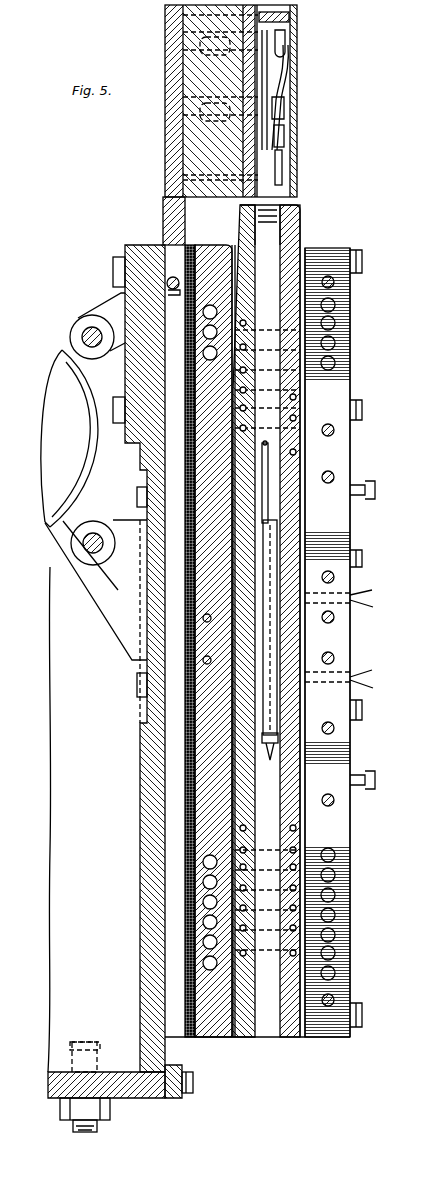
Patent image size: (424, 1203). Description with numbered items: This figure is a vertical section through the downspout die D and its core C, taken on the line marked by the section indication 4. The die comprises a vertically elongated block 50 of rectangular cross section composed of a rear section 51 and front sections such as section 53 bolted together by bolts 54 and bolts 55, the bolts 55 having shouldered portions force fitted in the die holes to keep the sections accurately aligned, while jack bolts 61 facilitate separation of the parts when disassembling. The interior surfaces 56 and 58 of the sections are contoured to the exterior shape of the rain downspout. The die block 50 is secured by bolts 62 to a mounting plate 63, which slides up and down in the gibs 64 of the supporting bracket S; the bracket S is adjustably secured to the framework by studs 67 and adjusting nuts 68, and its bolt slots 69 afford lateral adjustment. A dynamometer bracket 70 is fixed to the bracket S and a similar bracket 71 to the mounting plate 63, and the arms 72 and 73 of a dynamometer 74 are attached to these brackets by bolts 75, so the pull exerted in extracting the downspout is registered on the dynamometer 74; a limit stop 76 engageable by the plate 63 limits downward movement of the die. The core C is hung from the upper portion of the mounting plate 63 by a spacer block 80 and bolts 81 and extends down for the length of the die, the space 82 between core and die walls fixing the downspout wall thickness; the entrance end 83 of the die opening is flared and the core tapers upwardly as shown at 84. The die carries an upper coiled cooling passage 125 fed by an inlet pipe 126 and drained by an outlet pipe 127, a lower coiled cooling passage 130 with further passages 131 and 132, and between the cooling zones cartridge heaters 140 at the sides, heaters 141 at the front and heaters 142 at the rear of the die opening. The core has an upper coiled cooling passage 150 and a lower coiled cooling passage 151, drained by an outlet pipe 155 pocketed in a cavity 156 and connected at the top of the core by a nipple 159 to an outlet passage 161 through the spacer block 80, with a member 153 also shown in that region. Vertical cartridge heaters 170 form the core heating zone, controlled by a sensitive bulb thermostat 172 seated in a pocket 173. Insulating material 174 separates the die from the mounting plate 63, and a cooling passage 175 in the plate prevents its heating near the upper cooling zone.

The section line 4- 4 is at (297, 14).
The die block 50 is at (352, 443).
The rear section 51 is at (215, 1037).
The front section 53 is at (335, 1037).
The bolt 54 is at (358, 256).
The bolt 55 is at (335, 284).
The interior surface 56 is at (236, 775).
The interior surface 58 is at (305, 756).
The jack bolt 61 is at (372, 488).
The bolt 62 is at (230, 260).
The mounting plate 63 is at (165, 197).
The gib 64 is at (190, 1037).
The stud 67 is at (95, 1130).
The adjusting nut 68 is at (98, 1048).
The bolt slot 69 is at (118, 1092).
The dynamometer bracket 70 is at (98, 306).
The dynamometer bracket 71 is at (100, 612).
The dynamometer arm 72 is at (62, 348).
The dynamometer arm 73 is at (66, 548).
The dynamometer 74 is at (84, 425).
The bolt 75 is at (90, 333).
The limit stop 76 is at (183, 1098).
The spacer block 80 is at (252, 225).
The bolt 81 is at (183, 32).
The space 82 is at (305, 540).
The entrance end 83 is at (305, 250).
The taper 84 is at (297, 220).
The coiled cooling passage 125 is at (337, 343).
The inlet pipe 126 is at (337, 305).
The outlet pipe 127 is at (338, 366).
The lower coiled cooling passage 130 is at (337, 915).
The passage 131 is at (337, 966).
The passage 132 is at (337, 855).
The heater 140 is at (365, 592).
The heater 141 is at (336, 617).
The heater 142 is at (205, 656).
The coiled cooling passage 150 is at (300, 395).
The coiled cooling passage 151 is at (296, 835).
The valve member 153 is at (282, 150).
The outlet pipe 155 is at (280, 85).
The pocket 156 is at (278, 438).
The nipple 159 is at (287, 47).
The outlet passage 161 is at (195, 60).
The cartridge heater 170 is at (140, 740).
The thermostat 172 is at (272, 695).
The pocket 173 is at (278, 742).
The insulating material 174 is at (190, 903).
The cooling passage 175 is at (173, 276).
The core C is at (291, 640).
The downspout die D is at (351, 815).
The supporting bracket S is at (140, 820).